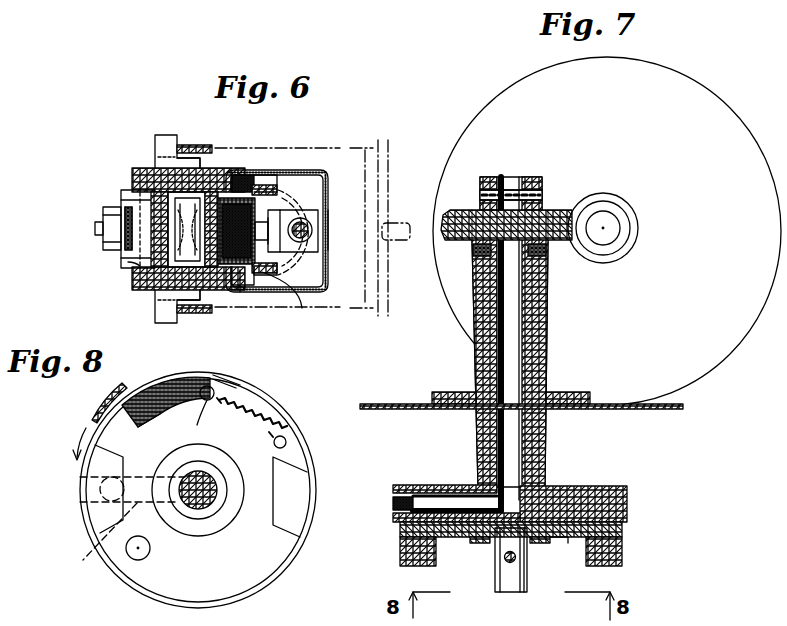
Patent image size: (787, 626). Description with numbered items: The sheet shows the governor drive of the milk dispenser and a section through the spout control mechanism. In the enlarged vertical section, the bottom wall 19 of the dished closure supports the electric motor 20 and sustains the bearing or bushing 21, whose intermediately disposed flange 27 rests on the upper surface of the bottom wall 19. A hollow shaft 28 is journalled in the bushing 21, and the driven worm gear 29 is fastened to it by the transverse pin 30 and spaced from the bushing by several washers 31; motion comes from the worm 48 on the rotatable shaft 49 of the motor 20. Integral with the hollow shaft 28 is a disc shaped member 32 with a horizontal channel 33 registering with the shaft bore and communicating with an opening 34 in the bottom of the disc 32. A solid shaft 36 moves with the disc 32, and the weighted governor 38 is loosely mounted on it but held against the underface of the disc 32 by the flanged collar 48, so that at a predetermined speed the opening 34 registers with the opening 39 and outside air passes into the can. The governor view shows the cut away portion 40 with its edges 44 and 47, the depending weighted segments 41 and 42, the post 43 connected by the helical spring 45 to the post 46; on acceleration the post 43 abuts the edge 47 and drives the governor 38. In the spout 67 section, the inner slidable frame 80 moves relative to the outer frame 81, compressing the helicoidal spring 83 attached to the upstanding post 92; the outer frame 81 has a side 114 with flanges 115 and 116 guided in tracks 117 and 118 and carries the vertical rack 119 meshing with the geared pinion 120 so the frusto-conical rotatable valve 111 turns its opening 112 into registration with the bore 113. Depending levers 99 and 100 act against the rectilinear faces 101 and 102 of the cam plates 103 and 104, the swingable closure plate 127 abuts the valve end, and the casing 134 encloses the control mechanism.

In FIG. 7, the bottom wall 19 is at (660, 409).
In FIG. 7, the electric motor 20 is at (697, 90).
In FIG. 7, the bearing or bushing 21 is at (552, 316).
In FIG. 7, the flange 27 is at (575, 392).
In FIG. 7, the hollow shaft 28 is at (522, 350).
In FIG. 7, the driven worm gear 29 is at (550, 210).
In FIG. 7, the transverse pin 30 is at (510, 190).
In FIG. 7, the washers 31 is at (546, 256).
In FIG. 7, the disc shaped member 32 is at (627, 495).
In FIG. 8, the disc shaped member 32 is at (126, 408).
In FIG. 7, the horizontal channel 33 is at (447, 492).
In FIG. 8, the horizontal channel 33 is at (100, 553).
In FIG. 7, the opening 34 is at (400, 530).
In FIG. 8, the opening 34 is at (100, 497).
In FIG. 7, the solid shaft 36 is at (502, 590).
In FIG. 8, the solid shaft 36 is at (198, 490).
In FIG. 7, the weighted governor 38 is at (568, 545).
In FIG. 8, the weighted governor 38 is at (258, 568).
In FIG. 8, the opening 39 is at (133, 560).
In FIG. 8, the cut away portion 40 is at (153, 418).
In FIG. 7, the weighted segment 41 is at (400, 558).
In FIG. 8, the weighted segment 41 is at (100, 530).
In FIG. 7, the weighted segment 42 is at (622, 547).
In FIG. 8, the weighted segment 42 is at (295, 470).
In FIG. 8, the post 43 is at (205, 413).
In FIG. 8, the edge 44 is at (240, 386).
In FIG. 8, the helical spring 45 is at (255, 420).
In FIG. 8, the post 46 is at (286, 440).
In FIG. 8, the edge 47 is at (100, 424).
In FIG. 7, the flanged collar 48 is at (630, 238).
In FIG. 7, the rotatable shaft 49 is at (612, 228).
In FIG. 6, the spout 67 is at (145, 170).
In FIG. 6, the inner slidable frame 80 is at (262, 185).
In FIG. 6, the outer frame 81 is at (318, 245).
In FIG. 6, the helicoidal spring 83 is at (309, 222).
In FIG. 6, the upstanding post 92 is at (308, 229).
In FIG. 6, the depending lever 99 is at (196, 300).
In FIG. 6, the depending lever 100 is at (195, 145).
In FIG. 6, the rectilinear face 101 is at (188, 313).
In FIG. 6, the rectilinear face 102 is at (190, 158).
In FIG. 6, the cam plate 103 is at (157, 315).
In FIG. 6, the cam plate 104 is at (157, 145).
In FIG. 6, the frusto-conical rotatable valve 111 is at (145, 200).
In FIG. 6, the opening 112 is at (125, 265).
In FIG. 6, the bore 113 is at (255, 280).
In FIG. 6, the side 114 is at (268, 182).
In FIG. 6, the flange 115 is at (236, 285).
In FIG. 6, the flange 116 is at (238, 198).
In FIG. 6, the track 117 is at (242, 292).
In FIG. 6, the track 118 is at (238, 178).
In FIG. 6, the vertical rack 119 is at (258, 185).
In FIG. 6, the geared pinion 120 is at (302, 305).
In FIG. 6, the swingable closure plate 127 is at (112, 212).
In FIG. 6, the casing 134 is at (328, 200).